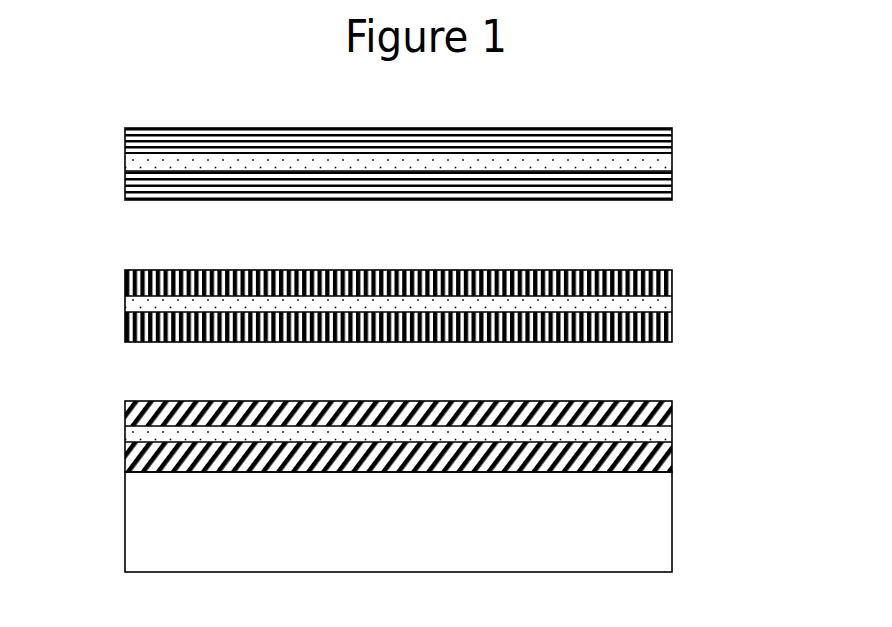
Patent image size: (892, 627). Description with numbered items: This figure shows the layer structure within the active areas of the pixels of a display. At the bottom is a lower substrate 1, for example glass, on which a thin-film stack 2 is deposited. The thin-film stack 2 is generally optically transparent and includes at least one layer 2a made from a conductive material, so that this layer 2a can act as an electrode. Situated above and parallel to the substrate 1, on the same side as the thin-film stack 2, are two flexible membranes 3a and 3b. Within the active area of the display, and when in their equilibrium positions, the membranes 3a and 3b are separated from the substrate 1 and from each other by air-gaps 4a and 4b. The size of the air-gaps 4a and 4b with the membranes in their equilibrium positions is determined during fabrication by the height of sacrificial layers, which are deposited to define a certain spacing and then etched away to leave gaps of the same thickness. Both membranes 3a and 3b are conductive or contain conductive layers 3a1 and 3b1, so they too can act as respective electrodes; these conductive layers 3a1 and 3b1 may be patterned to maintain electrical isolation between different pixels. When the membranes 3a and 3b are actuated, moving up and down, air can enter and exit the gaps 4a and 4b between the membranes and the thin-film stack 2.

The lower substrate 1 is at (168, 521).
The thin-film stack 2 is at (113, 402).
The conductive layer 2a is at (638, 433).
The flexible membrane 3a is at (113, 272).
The conductive layer 3a1 is at (638, 303).
The flexible membrane 3b is at (113, 132).
The conductive layer 3b1 is at (638, 162).
The air-gap 4a is at (638, 372).
The air-gap 4b is at (638, 237).